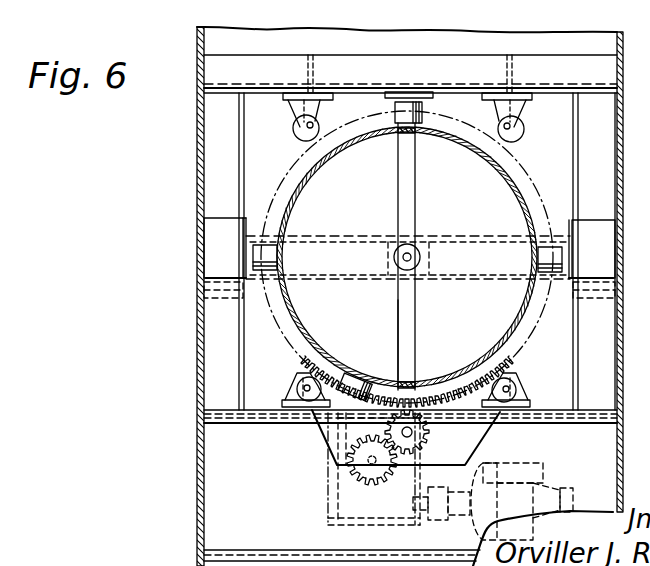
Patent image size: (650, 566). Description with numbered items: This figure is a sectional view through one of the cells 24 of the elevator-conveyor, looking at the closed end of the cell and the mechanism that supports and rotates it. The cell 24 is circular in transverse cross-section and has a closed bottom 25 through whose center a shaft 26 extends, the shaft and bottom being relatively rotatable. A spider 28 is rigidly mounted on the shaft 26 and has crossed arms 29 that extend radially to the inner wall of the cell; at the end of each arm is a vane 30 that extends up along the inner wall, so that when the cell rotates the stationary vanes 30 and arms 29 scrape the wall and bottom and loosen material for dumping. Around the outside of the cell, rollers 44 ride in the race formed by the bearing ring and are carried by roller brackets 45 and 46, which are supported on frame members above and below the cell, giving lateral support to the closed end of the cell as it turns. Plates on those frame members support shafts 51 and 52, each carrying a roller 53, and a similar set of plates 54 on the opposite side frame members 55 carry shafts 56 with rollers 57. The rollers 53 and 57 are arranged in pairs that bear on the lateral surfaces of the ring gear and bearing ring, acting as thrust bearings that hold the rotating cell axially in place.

The cell 24 is at (512, 182).
The closed bottom 25 is at (471, 199).
The shaft 26 is at (412, 249).
The spider 28 is at (427, 279).
The arms 29 is at (417, 332).
The vane 30 is at (413, 134).
The rollers 44 is at (525, 133).
The roller bracket 45 is at (298, 113).
The roller bracket 46 is at (290, 393).
The shaft 51 is at (408, 100).
The shaft 52 is at (357, 376).
The roller 53 is at (420, 111).
The plates 54 is at (243, 290).
The side frame members 55 is at (245, 178).
The shafts 56 is at (262, 258).
The rollers 57 is at (278, 258).